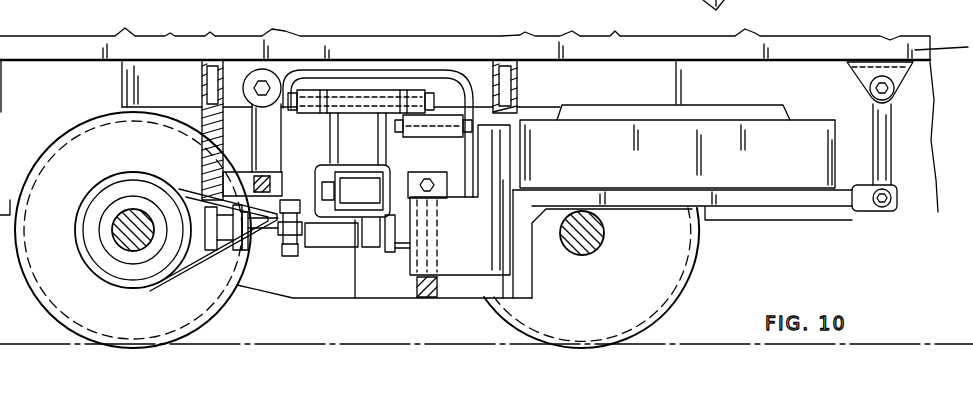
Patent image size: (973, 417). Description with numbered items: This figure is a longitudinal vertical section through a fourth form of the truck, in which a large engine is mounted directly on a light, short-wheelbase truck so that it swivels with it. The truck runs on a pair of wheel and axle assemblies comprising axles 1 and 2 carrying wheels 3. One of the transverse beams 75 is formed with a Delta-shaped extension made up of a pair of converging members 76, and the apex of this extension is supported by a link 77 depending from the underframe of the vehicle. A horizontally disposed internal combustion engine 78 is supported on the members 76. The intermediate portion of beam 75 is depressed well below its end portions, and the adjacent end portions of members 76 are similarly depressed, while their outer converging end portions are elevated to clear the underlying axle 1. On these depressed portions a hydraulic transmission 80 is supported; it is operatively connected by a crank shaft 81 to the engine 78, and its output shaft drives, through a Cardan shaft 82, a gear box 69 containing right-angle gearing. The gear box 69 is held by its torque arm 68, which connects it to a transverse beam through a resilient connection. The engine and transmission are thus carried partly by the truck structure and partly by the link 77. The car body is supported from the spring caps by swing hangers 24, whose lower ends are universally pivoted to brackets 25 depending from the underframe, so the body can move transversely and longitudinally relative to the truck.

The axle 1 is at (603, 230).
The axle 2 is at (115, 240).
The wheel 3 is at (33, 293).
The swing hanger 24 is at (248, 152).
The bracket 25 is at (197, 120).
The torque arm 68 is at (218, 263).
The gear box 69 is at (103, 200).
The transverse beam 75 is at (415, 287).
The converging member 76 is at (733, 200).
The link 77 is at (892, 137).
The internal combustion engine 78 is at (677, 146).
The hydraulic transmission 80 is at (460, 200).
The crank shaft 81 is at (518, 120).
The Cardan shaft 82 is at (318, 247).